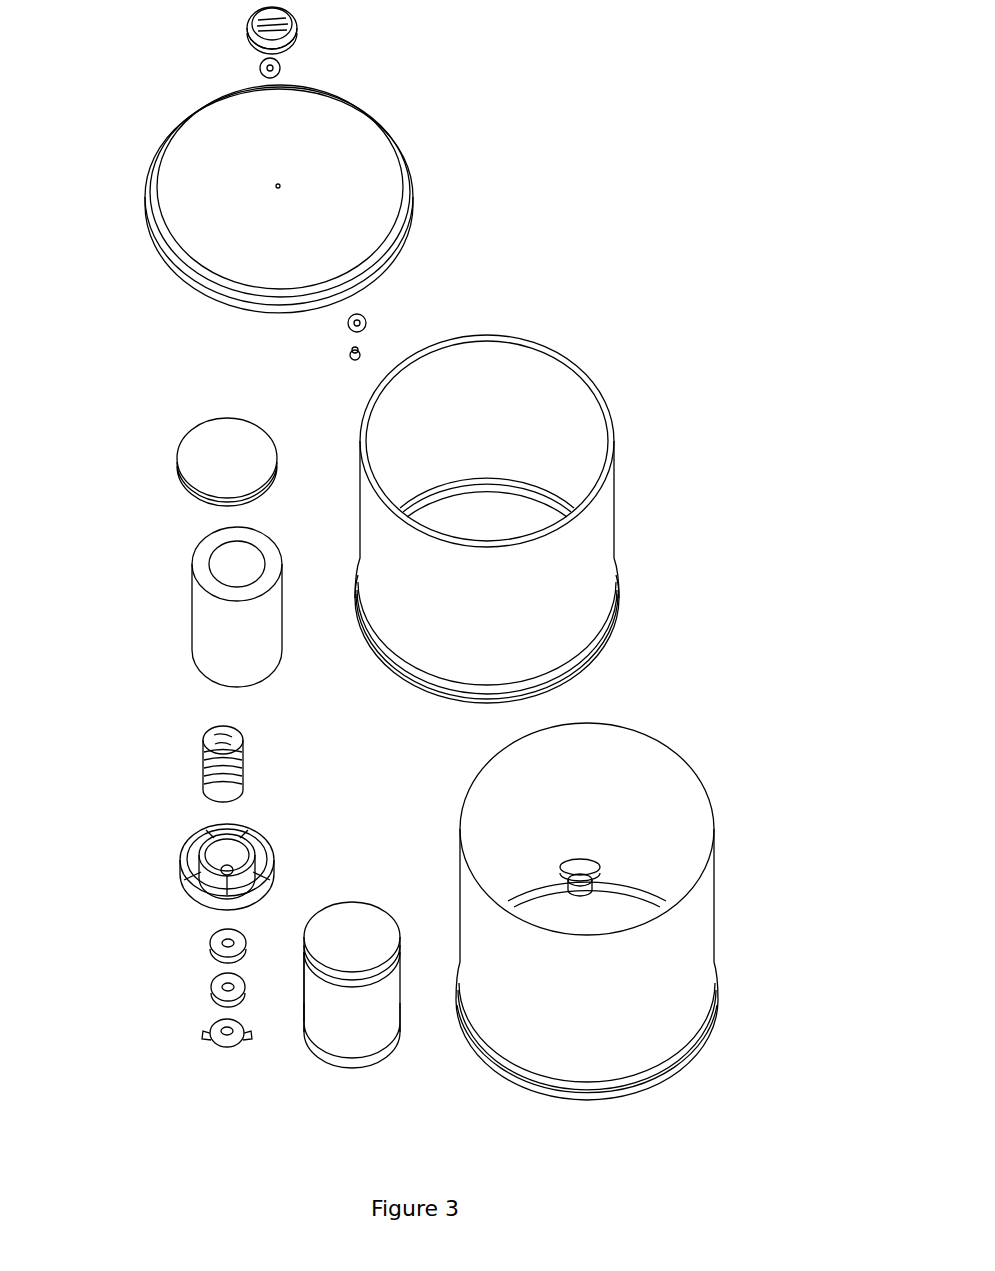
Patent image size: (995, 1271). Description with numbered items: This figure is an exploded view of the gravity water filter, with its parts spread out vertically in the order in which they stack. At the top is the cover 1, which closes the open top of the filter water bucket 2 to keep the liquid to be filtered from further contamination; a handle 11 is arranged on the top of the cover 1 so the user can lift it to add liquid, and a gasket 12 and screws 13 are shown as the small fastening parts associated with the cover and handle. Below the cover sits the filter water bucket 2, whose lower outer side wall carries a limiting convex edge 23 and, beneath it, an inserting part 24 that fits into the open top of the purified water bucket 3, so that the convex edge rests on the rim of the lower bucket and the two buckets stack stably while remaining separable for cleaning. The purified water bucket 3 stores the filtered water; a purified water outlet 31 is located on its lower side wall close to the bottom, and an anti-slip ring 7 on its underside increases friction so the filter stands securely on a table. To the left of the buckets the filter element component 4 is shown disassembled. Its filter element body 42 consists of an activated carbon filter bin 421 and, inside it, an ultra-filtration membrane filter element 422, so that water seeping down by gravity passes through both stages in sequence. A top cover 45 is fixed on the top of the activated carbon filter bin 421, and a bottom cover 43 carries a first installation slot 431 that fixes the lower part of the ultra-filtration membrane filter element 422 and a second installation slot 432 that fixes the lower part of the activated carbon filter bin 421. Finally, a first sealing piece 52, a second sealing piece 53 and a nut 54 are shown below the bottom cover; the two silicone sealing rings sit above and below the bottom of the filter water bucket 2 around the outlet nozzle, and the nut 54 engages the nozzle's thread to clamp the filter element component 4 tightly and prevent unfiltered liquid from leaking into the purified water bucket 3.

The cover 1 is at (398, 207).
The handle 11 is at (292, 27).
The gasket 12 is at (258, 65).
The screws 13 is at (364, 349).
The filter water bucket 2 is at (597, 507).
The limiting convex edge 23 is at (612, 605).
The inserting part 24 is at (583, 667).
The purified water bucket 3 is at (697, 984).
The purified water outlet 31 is at (594, 891).
The anti-slip ring 7 is at (627, 1095).
The filter element component 4 is at (386, 1022).
The filter element body 42 is at (320, 1018).
The activated carbon filter bin 421 is at (206, 618).
The ultra-filtration membrane filter element 422 is at (250, 760).
The bottom cover 43 is at (232, 955).
The first installation slot 431 is at (252, 848).
The second installation slot 432 is at (195, 838).
The top cover 45 is at (196, 444).
The first sealing piece 52 is at (208, 948).
The second sealing piece 53 is at (208, 991).
The nut 54 is at (205, 1042).